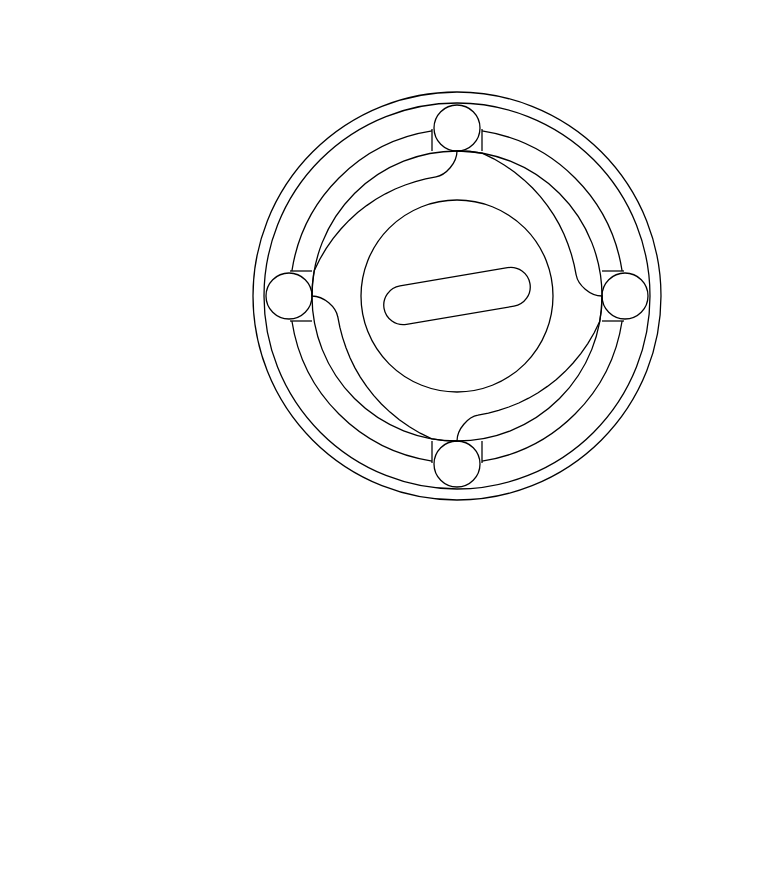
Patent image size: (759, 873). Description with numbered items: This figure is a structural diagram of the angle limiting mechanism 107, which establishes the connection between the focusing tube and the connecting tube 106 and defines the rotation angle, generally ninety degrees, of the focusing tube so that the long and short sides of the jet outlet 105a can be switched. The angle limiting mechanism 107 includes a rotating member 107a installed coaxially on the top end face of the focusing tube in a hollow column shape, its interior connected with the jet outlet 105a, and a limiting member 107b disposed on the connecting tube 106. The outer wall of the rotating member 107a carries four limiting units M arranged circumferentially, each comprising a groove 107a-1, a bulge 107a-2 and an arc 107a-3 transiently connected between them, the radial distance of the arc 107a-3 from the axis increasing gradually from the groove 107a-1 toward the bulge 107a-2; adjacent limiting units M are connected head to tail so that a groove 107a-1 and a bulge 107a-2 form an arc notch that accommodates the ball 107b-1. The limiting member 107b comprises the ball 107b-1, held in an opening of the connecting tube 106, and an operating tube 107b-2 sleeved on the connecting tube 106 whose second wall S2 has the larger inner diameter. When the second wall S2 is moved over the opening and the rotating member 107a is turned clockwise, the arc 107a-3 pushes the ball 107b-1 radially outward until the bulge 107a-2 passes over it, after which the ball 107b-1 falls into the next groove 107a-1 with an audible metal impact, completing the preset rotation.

The angle limiting mechanism 107 is at (235, 198).
The rotating member 107a is at (360, 363).
The groove 107a-1 is at (474, 426).
The bulge 107a-2 is at (598, 326).
The arc 107a-3 is at (598, 392).
The limiting member 107b is at (462, 69).
The ball 107b-1 is at (457, 115).
The operating tube 107b-2 is at (357, 120).
The connecting tube 106 is at (615, 232).
The jet outlet 105a is at (385, 312).
The second wall S2 is at (585, 168).
The limiting unit M is at (501, 503).